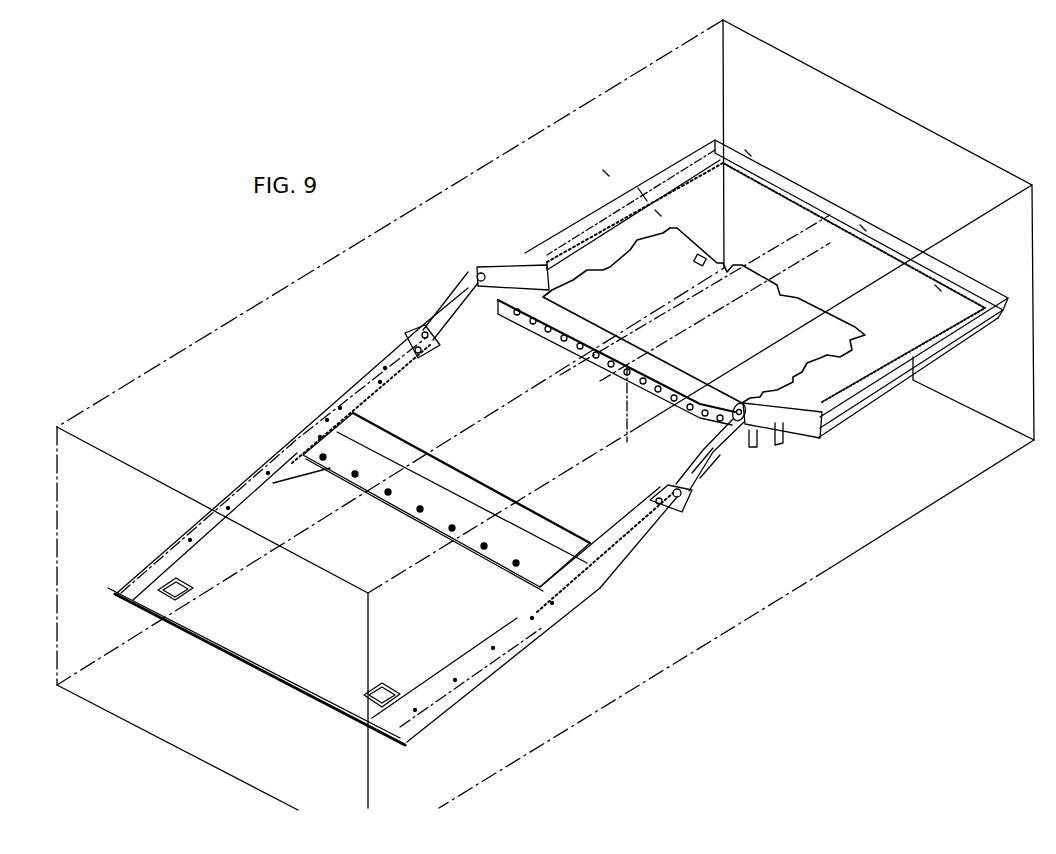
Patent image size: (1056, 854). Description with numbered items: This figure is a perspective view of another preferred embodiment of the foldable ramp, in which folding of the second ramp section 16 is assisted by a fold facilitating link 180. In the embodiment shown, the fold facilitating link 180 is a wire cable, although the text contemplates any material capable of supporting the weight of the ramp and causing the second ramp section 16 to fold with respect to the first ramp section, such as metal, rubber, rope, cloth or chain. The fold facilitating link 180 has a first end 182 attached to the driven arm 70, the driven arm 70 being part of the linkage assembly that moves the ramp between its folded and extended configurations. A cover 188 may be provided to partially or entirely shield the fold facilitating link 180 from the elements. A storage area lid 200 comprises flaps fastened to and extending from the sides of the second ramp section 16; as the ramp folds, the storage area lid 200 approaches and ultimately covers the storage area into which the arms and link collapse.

The second ramp section 16 is at (462, 640).
The driven arm 70 is at (723, 458).
The fold facilitating link 180 is at (663, 503).
The first end 182 is at (687, 487).
The cover 188 is at (608, 548).
The storage area lid 200 is at (419, 727).